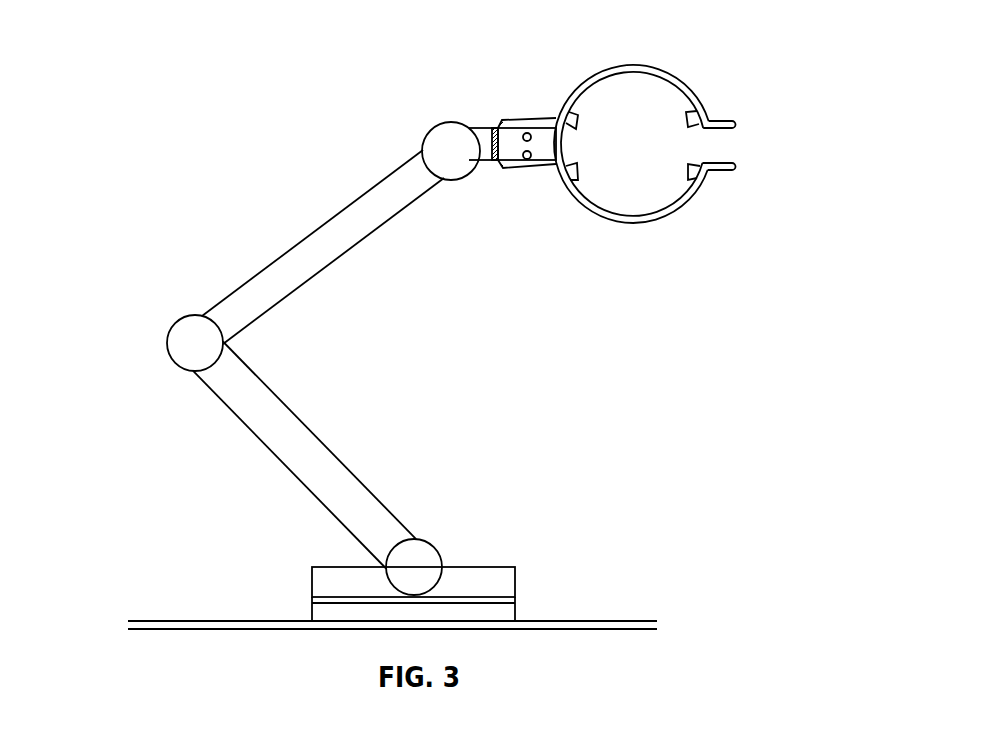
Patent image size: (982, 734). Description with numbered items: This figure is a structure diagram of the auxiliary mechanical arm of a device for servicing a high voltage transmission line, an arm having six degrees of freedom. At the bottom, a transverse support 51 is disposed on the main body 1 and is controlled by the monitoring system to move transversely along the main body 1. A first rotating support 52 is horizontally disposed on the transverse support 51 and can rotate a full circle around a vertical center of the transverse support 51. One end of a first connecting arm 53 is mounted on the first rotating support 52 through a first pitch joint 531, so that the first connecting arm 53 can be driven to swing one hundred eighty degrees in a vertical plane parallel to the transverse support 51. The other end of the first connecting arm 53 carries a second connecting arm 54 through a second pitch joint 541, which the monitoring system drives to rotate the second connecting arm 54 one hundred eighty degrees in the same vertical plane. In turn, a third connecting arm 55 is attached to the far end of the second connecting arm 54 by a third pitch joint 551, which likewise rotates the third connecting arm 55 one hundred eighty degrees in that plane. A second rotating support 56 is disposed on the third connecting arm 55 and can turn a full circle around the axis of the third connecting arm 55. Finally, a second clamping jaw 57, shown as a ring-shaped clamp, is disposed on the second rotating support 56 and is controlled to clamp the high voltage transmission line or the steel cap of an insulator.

The main body 1 is at (190, 620).
The transverse support 51 is at (493, 612).
The first rotating support 52 is at (490, 583).
The first connecting arm 53 is at (328, 475).
The first pitch joint 531 is at (428, 548).
The second connecting arm 54 is at (303, 260).
The second pitch joint 541 is at (195, 350).
The third connecting arm 55 is at (485, 127).
The third pitch joint 551 is at (452, 152).
The second rotating support 56 is at (492, 166).
The second clamping jaw 57 is at (512, 143).